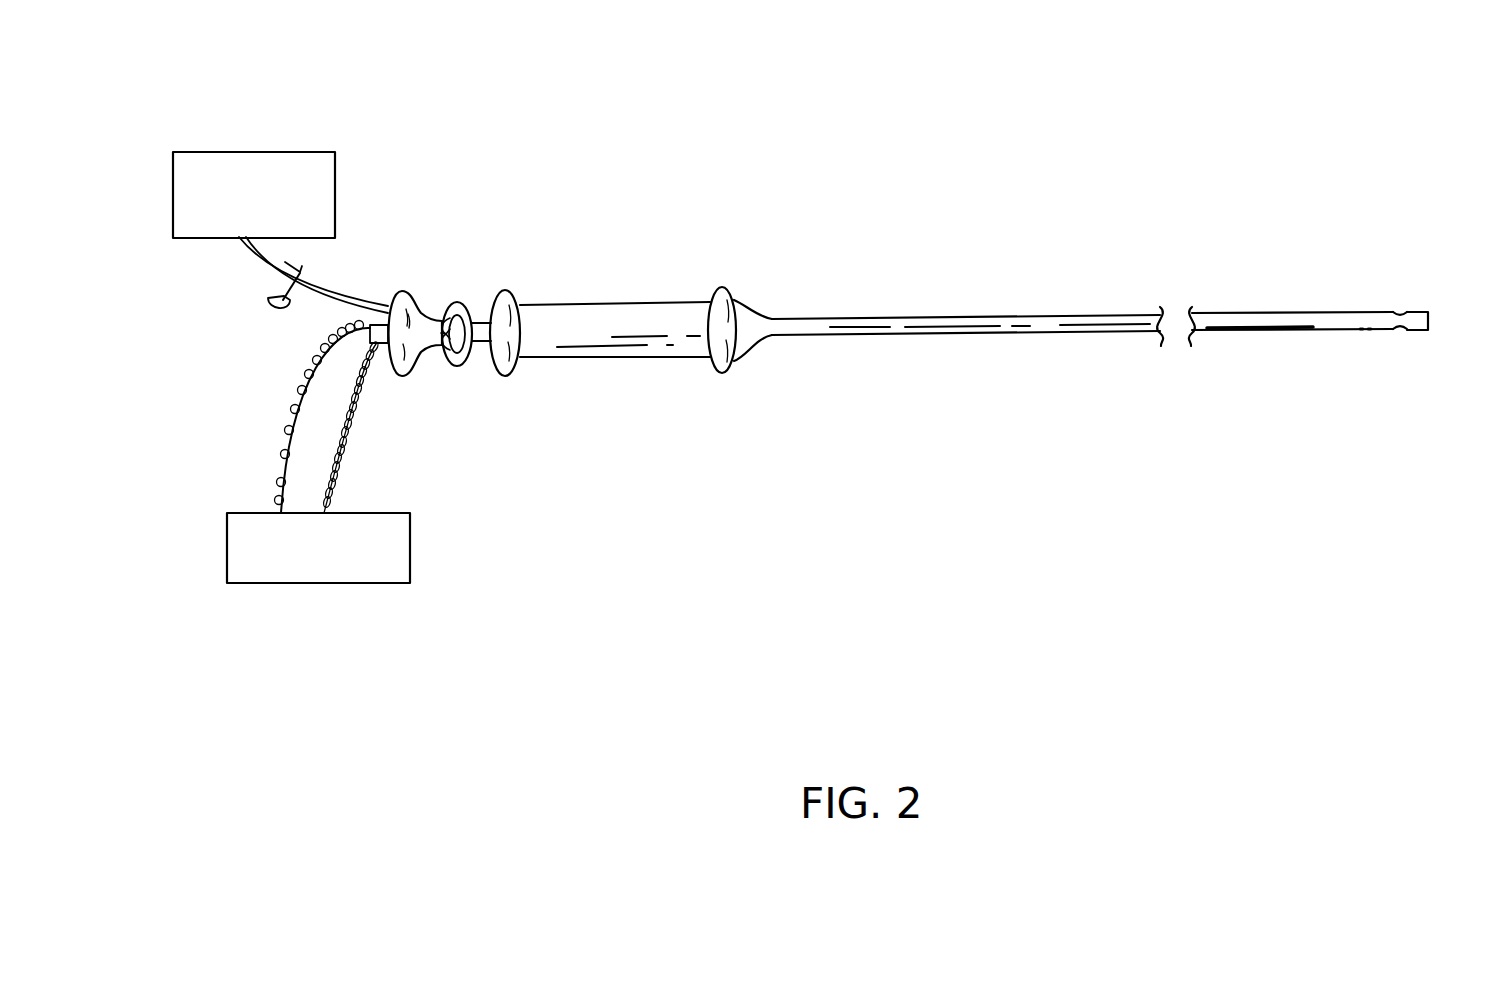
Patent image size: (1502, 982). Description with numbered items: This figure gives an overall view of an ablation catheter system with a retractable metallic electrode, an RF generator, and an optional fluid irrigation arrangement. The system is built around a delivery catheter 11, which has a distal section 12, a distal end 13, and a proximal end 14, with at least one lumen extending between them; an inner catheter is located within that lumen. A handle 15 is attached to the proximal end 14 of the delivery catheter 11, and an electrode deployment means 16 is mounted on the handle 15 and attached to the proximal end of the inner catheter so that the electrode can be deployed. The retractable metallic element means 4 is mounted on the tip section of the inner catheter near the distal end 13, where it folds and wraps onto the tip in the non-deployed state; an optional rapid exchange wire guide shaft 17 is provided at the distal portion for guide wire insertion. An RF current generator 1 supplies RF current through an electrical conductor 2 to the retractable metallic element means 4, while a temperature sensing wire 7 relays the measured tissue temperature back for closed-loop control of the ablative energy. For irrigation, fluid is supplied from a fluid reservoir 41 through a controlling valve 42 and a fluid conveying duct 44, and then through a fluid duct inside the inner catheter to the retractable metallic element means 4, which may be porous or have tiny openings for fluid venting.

The RF current generator 1 is at (410, 525).
The electrical conductor 2 is at (290, 390).
The retractable metallic element means 4 is at (1398, 337).
The temperature sensing wire 7 is at (347, 438).
The delivery catheter 11 is at (1075, 310).
The distal section 12 is at (1437, 281).
The distal end 13 is at (1433, 302).
The proximal end 14 is at (782, 312).
The handle 15 is at (613, 298).
The electrode deployment means 16 is at (425, 304).
The rapid exchange wire guide shaft 17 is at (1363, 340).
The fluid reservoir 41 is at (335, 186).
The controlling valve 42 is at (258, 312).
The fluid conveying duct 44 is at (342, 294).